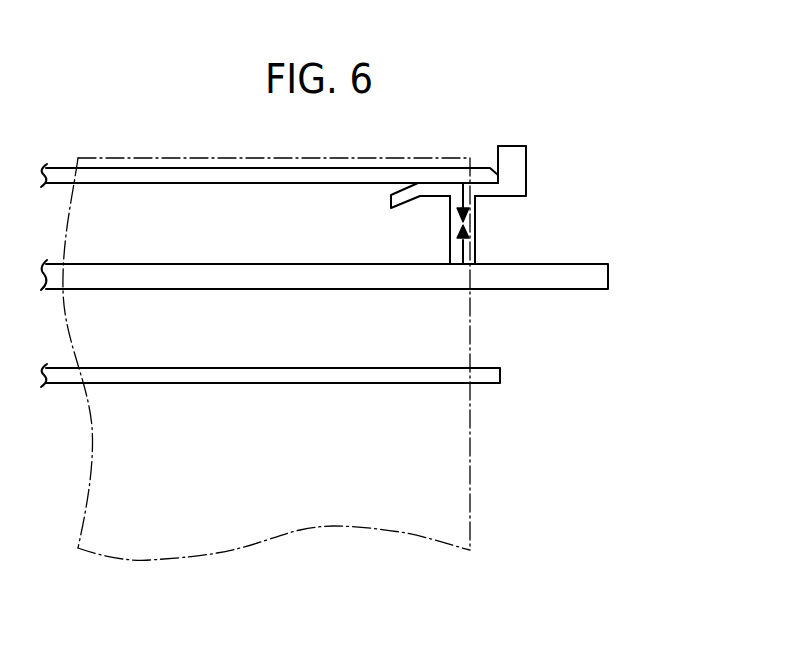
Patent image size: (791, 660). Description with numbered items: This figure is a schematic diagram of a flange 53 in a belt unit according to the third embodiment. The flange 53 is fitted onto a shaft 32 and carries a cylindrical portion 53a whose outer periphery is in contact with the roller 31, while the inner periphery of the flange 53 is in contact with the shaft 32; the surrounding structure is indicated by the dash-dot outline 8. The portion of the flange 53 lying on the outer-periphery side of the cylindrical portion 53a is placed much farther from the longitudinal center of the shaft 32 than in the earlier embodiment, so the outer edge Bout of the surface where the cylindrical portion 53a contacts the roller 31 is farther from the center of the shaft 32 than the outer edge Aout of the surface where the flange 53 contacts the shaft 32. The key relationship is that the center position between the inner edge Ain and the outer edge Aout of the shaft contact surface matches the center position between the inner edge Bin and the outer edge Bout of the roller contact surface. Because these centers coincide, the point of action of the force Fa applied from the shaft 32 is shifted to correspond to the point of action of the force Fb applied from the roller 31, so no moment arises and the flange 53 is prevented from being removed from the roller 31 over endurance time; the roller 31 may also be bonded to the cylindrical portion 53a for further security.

The housing / case 8 is at (452, 442).
The roller 31 is at (215, 176).
The shaft 32 is at (609, 276).
The flange 53 is at (477, 219).
The cylindrical portion 53a is at (445, 187).
The inner edge Bin is at (425, 186).
The outer edge Bout is at (497, 165).
The inner edge Ain is at (451, 265).
The outer edge Aout is at (476, 265).
The force Fb is at (449, 208).
The force Fa is at (449, 245).